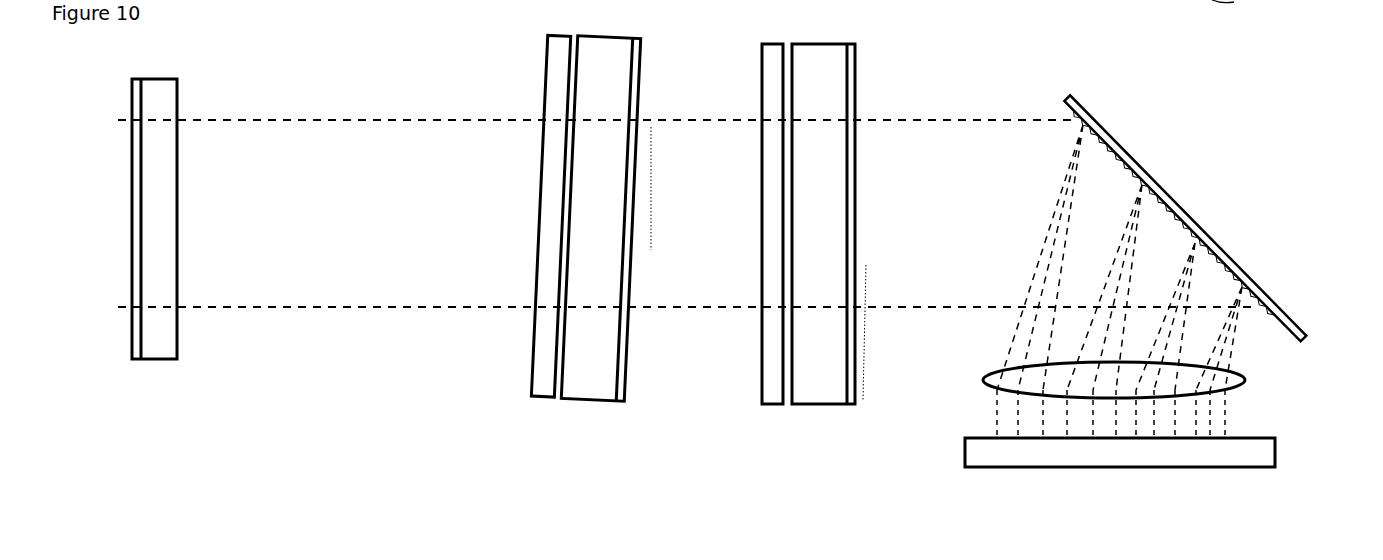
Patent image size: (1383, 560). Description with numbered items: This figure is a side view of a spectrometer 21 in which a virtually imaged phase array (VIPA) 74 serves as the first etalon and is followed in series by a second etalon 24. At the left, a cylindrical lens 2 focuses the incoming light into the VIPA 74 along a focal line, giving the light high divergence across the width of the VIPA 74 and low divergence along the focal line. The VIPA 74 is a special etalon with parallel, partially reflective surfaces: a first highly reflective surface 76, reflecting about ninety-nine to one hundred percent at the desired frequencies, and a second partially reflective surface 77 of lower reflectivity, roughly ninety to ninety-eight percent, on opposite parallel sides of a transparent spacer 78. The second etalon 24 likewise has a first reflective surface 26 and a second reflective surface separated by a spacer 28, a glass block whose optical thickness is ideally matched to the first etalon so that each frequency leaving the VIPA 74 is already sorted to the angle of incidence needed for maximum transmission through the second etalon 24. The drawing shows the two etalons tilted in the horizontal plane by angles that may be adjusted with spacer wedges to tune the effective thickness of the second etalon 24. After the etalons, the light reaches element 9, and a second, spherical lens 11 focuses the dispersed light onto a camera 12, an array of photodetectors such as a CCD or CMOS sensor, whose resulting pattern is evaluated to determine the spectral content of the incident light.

The cylindrical lens 2 is at (158, 345).
The dual-etalon spectrometer 21 is at (385, 17).
The virtually imaged phase array (VIPA) 74 is at (584, 241).
The first highly reflective surface 76 is at (550, 216).
The second partially reflective surface 77 is at (624, 219).
The transparent spacer 78 is at (600, 218).
The second etalon 24 is at (809, 241).
The first reflective surface 26 is at (772, 224).
The spacer 28 is at (823, 224).
The diffraction grating 9 is at (1120, 142).
The second lens 11 is at (993, 365).
The camera 12 is at (1280, 450).